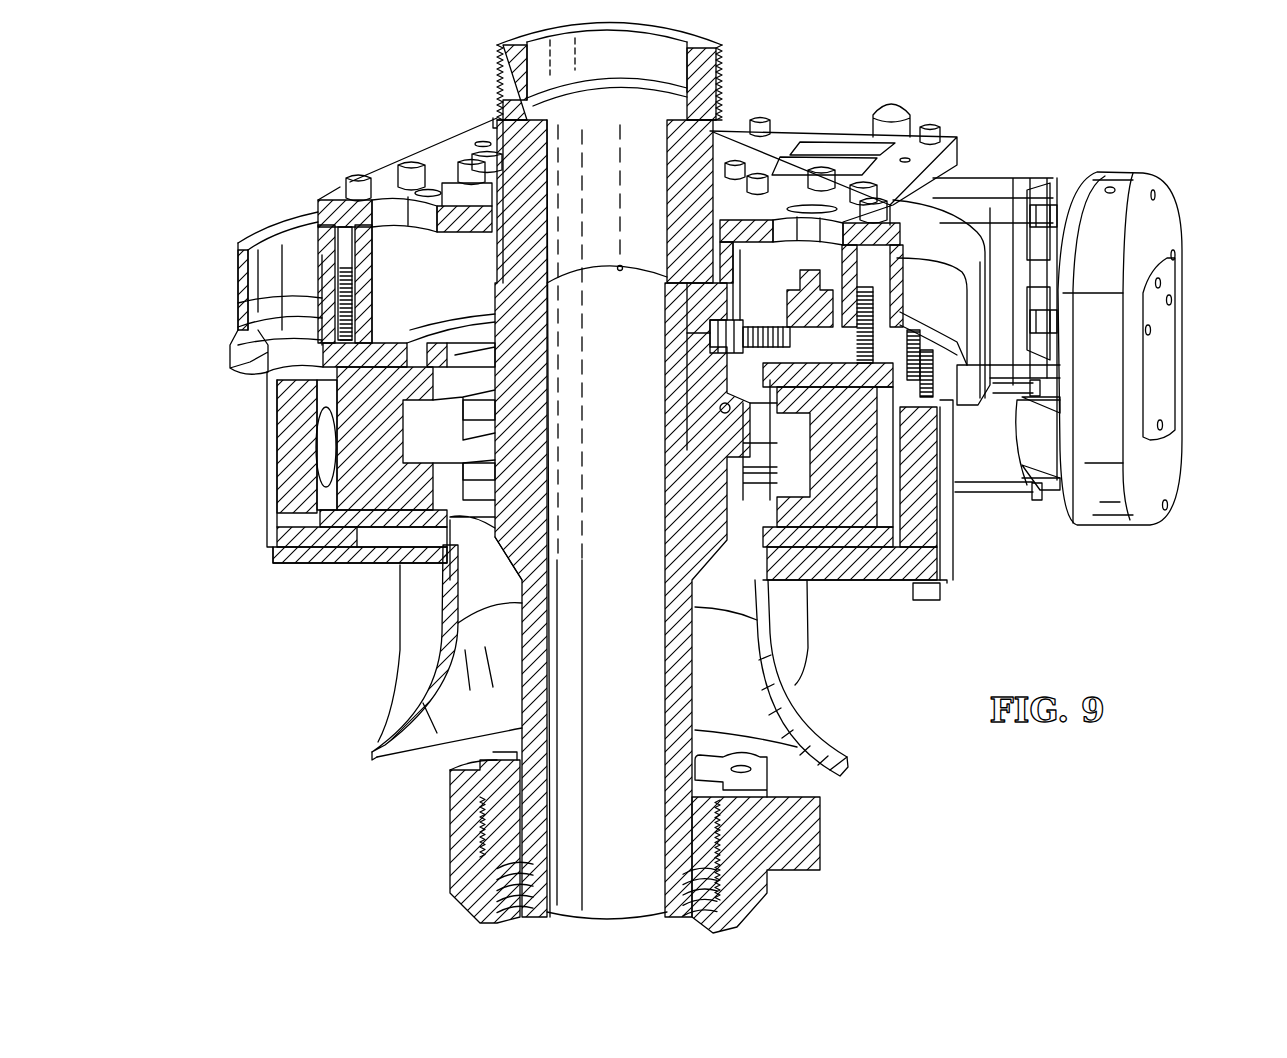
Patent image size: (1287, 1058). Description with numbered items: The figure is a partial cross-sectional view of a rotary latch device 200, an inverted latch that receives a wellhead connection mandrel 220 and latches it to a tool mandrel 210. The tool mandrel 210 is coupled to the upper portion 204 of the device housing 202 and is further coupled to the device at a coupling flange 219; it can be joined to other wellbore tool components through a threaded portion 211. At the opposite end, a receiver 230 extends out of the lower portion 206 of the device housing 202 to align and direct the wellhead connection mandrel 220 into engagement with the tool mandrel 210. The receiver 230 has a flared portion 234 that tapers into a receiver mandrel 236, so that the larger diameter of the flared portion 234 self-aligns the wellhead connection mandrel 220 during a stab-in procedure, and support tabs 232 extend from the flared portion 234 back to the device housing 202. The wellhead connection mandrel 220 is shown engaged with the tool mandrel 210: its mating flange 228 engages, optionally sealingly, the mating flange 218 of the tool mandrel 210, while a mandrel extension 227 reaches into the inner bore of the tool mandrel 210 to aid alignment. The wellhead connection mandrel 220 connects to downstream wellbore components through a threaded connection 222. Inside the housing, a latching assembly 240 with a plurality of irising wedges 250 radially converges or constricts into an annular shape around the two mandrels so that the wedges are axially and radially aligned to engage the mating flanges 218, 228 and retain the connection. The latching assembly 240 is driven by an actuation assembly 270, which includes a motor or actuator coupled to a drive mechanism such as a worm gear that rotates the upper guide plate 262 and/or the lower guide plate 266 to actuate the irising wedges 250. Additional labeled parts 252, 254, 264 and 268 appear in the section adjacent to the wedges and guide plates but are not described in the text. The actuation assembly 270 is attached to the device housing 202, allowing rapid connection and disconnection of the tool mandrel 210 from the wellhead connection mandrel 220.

The rotary latch device 200 is at (952, 74).
The device housing 202 is at (234, 384).
The upper portion 204 is at (240, 246).
The lower portion 206 is at (267, 511).
The tool mandrel 210 is at (695, 131).
The threaded portion 211 is at (497, 56).
The mating flange 218 is at (740, 444).
The coupling flange 219 is at (458, 192).
The wellhead connection mandrel 220 is at (530, 700).
The threaded connection 222 is at (807, 843).
The mandrel extension 227 is at (513, 264).
The mating flange 228 is at (740, 478).
The receiver 230 is at (820, 761).
The support tabs 232 is at (400, 658).
The flared portion 234 is at (410, 751).
The receiver mandrel 236 is at (494, 511).
The latching assembly 240 is at (277, 488).
The irising wedges 250 is at (347, 453).
The upper collar 252 is at (496, 433).
The lower collar 254 is at (500, 463).
The upper guide plate 262 is at (397, 344).
The spacer 264 is at (437, 344).
The lower guide plate 266 is at (333, 565).
The bottom plate 268 is at (397, 568).
The actuation assembly 270 is at (1157, 239).